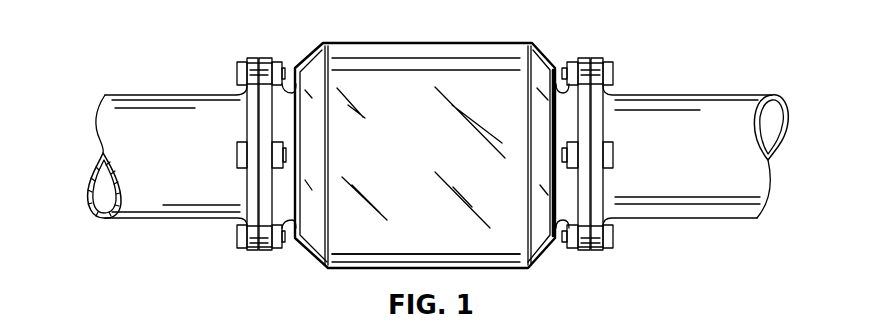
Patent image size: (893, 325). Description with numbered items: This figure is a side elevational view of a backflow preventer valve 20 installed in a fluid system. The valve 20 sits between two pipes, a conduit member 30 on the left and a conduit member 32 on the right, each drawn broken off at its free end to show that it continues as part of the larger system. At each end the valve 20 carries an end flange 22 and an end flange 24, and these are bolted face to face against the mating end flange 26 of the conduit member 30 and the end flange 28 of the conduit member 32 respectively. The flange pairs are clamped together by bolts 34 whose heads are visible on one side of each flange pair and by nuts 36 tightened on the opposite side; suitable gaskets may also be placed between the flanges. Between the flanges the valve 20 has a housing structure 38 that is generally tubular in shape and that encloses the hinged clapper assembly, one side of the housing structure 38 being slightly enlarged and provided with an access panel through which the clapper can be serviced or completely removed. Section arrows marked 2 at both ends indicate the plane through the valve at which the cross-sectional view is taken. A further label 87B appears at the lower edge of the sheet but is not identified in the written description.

The section line 2- 2 is at (88, 150).
The backflow preventer valve 20 is at (515, 275).
The end flange 22 is at (263, 250).
The end flange 24 is at (583, 250).
The end flange 26 is at (250, 248).
The end flange 28 is at (597, 250).
The conduit member 30 is at (155, 207).
The conduit member 32 is at (728, 212).
The bolt 34 is at (237, 72).
The nut 36 is at (284, 72).
The housing structure 38 is at (355, 257).
The element 87B is at (300, 303).